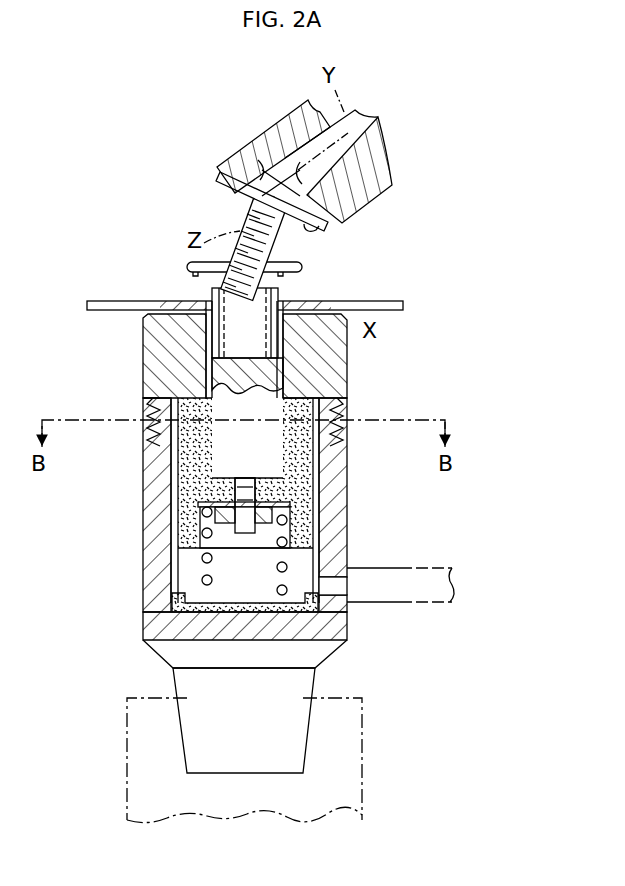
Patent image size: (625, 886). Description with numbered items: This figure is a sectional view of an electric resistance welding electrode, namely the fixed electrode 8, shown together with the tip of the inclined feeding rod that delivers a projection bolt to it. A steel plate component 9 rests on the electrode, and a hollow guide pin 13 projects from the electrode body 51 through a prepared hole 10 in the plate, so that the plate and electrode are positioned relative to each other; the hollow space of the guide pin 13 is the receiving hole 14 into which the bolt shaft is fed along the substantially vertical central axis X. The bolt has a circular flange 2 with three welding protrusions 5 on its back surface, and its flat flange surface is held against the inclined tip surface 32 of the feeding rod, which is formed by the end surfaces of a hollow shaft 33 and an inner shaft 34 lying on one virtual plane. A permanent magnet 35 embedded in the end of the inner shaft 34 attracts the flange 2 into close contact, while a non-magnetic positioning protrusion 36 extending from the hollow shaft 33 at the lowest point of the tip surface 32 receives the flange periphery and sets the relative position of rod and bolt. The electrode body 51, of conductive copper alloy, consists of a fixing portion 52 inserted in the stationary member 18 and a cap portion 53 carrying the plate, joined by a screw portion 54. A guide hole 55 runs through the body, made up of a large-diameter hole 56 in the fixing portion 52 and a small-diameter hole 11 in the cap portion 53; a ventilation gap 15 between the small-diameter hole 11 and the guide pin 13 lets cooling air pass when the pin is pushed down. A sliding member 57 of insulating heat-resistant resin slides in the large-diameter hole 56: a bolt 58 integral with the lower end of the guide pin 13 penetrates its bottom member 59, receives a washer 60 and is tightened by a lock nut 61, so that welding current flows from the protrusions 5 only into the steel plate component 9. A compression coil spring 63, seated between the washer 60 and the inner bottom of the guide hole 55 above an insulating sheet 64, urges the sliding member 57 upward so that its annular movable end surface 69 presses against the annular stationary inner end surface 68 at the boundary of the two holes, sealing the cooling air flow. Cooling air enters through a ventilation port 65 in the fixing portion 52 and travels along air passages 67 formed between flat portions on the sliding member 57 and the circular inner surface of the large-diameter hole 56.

The circular flange 2 is at (358, 208).
The welding protrusions 5 is at (303, 218).
The fixed electrode 8 is at (130, 381).
The steel plate component 9 is at (119, 301).
The prepared hole 10 is at (210, 293).
The small-diameter hole (guide hole) 11 is at (200, 363).
The guide pin 13 is at (190, 460).
The receiving hole 14 is at (212, 333).
The ventilation gap 15 is at (297, 360).
The stationary member 18 is at (362, 735).
The tip surface 32 is at (240, 188).
The hollow shaft 33 is at (265, 130).
The inner shaft 34 is at (343, 158).
The permanent magnet 35 is at (237, 172).
The positioning protrusion 36 is at (318, 228).
The electrode body 51 is at (130, 493).
The fixing portion 52 is at (349, 540).
The cap portion 53 is at (348, 379).
The screw portion 54 is at (346, 434).
The guide hole 55 is at (185, 558).
The large-diameter hole 56 is at (175, 511).
The sliding member 57 is at (347, 472).
The bolt 58 is at (248, 478).
The bottom member 59 is at (223, 480).
The washer 60 is at (322, 513).
The lock nut 61 is at (244, 551).
The compression coil spring 63 is at (172, 583).
The insulating sheet 64 is at (231, 612).
The ventilation port 65 is at (337, 585).
The air passage 67 is at (315, 495).
The stationary inner end surface 68 is at (329, 405).
The movable end surface 69 is at (176, 392).